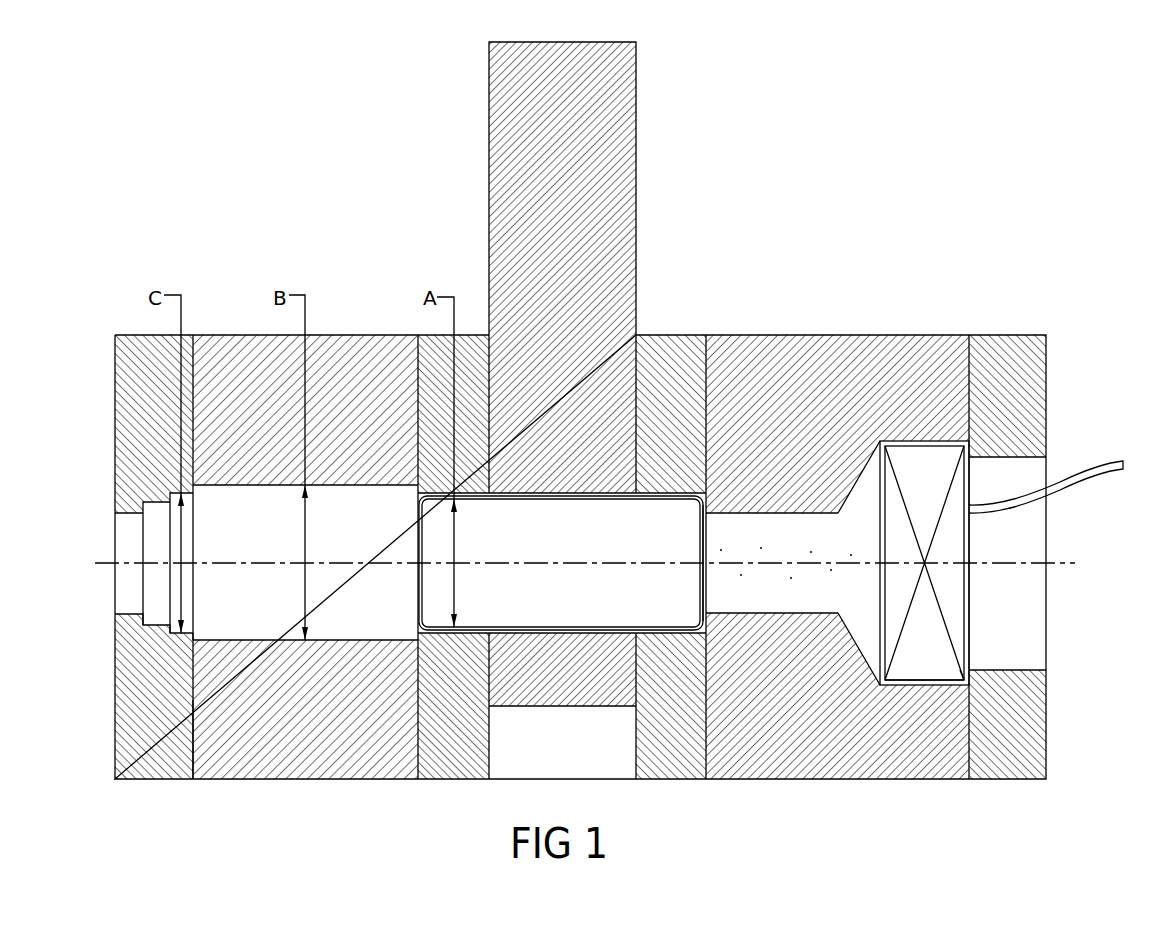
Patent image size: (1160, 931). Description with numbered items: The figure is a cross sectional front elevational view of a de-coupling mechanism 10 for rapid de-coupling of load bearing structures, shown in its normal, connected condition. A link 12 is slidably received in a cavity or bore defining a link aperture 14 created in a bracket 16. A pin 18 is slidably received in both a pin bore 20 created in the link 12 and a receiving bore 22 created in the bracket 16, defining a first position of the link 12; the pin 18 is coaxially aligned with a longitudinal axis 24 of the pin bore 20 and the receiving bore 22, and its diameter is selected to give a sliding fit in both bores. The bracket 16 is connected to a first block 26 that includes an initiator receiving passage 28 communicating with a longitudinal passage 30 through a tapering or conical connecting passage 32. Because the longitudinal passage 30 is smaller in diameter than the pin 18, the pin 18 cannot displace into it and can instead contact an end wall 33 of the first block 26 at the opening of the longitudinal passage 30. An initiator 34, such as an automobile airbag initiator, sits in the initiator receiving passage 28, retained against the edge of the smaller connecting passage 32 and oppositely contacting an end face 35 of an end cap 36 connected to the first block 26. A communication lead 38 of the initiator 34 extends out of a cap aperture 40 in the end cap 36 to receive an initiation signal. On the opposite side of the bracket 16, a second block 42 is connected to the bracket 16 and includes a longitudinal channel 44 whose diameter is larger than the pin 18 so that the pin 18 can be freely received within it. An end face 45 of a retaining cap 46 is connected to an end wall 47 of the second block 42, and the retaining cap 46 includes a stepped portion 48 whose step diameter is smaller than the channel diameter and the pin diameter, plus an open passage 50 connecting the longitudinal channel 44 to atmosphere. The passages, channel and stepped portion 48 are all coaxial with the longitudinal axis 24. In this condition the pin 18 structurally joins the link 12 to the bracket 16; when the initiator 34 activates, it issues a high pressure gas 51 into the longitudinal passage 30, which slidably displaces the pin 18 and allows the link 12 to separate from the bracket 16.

The de-coupling mechanism 10 is at (833, 216).
The link 12 is at (612, 186).
The link aperture 14 is at (572, 752).
The bracket 16 is at (672, 352).
The pin 18 is at (658, 510).
The pin bore 20 is at (550, 493).
The receiving bore 22 is at (470, 632).
The longitudinal axis 24 is at (1068, 565).
The first block 26 is at (900, 365).
The initiator receiving passage 28 is at (902, 684).
The longitudinal passage 30 is at (770, 603).
The connecting passage 32 is at (863, 632).
The end wall 33 is at (716, 499).
The initiator 34 is at (927, 665).
The end face 35 is at (958, 671).
The end cap 36 is at (1007, 352).
The communication lead 38 is at (1085, 476).
The cap aperture 40 is at (1007, 670).
The second block 42 is at (355, 350).
The longitudinal channel 44 is at (353, 632).
The end face 45 is at (216, 645).
The retaining cap 46 is at (128, 697).
The end wall 47 is at (184, 745).
The stepped portion 48 is at (170, 500).
The open passage 50 is at (130, 613).
The high pressure gas 51 is at (803, 550).